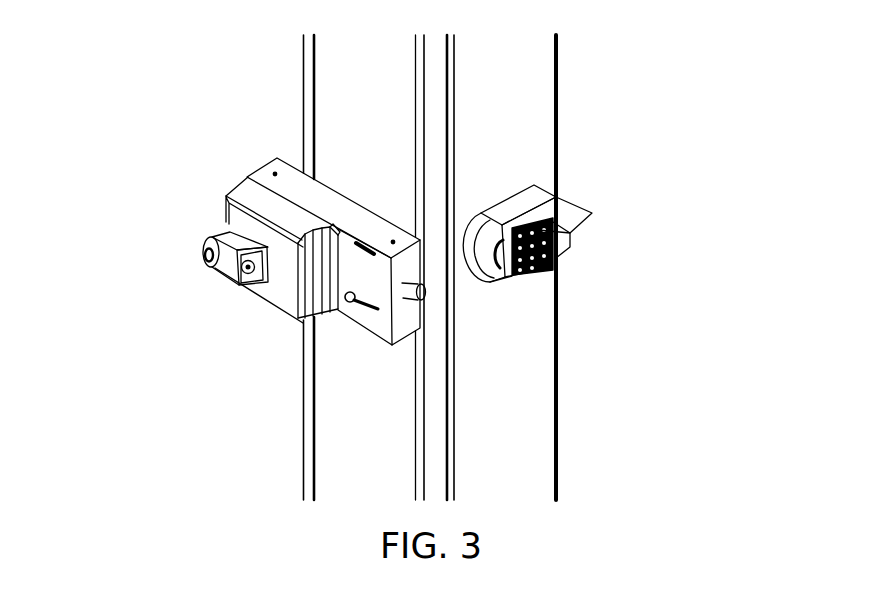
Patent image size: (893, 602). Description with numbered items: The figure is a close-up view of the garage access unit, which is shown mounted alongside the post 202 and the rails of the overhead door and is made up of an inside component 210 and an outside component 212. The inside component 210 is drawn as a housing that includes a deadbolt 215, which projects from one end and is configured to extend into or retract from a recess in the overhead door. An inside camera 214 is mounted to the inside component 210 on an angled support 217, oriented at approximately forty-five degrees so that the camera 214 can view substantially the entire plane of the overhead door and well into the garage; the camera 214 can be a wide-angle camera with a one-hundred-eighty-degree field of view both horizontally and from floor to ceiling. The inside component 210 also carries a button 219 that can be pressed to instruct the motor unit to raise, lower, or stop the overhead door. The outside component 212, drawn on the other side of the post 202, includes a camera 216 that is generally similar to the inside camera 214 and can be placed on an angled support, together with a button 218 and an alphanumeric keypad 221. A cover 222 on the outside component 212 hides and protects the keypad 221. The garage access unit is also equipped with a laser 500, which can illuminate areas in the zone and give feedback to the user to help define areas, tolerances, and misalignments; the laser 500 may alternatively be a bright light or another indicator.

The post 202 is at (528, 110).
The inside component 210 is at (222, 166).
The outside component 212 is at (575, 181).
The inside camera 214 is at (248, 274).
The deadbolt 215 is at (425, 307).
The camera 216 is at (573, 240).
The angled support 217 is at (221, 232).
The button 218 is at (505, 276).
The button 219 is at (208, 265).
The alphanumeric keypad 221 is at (540, 268).
The cover 222 is at (583, 205).
The laser 500 is at (285, 297).